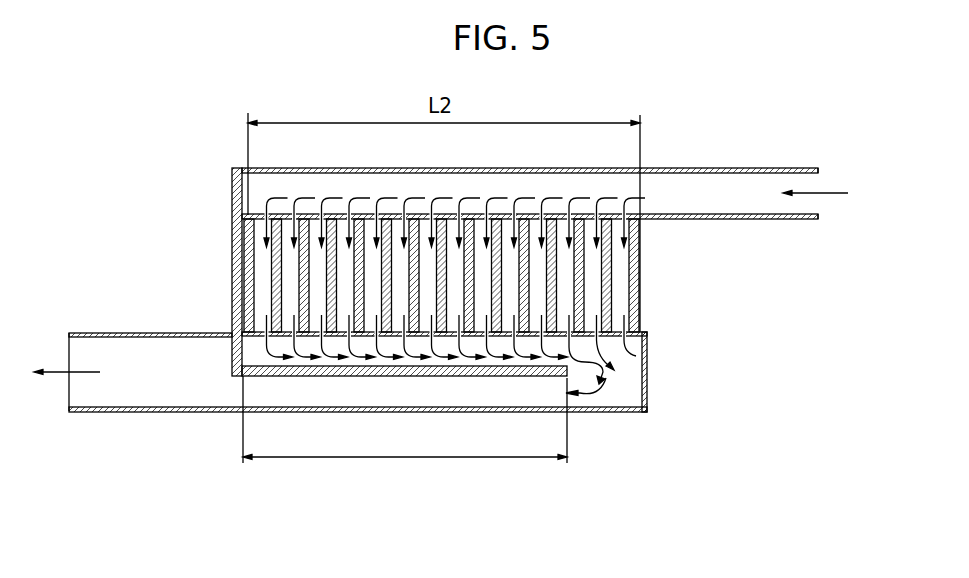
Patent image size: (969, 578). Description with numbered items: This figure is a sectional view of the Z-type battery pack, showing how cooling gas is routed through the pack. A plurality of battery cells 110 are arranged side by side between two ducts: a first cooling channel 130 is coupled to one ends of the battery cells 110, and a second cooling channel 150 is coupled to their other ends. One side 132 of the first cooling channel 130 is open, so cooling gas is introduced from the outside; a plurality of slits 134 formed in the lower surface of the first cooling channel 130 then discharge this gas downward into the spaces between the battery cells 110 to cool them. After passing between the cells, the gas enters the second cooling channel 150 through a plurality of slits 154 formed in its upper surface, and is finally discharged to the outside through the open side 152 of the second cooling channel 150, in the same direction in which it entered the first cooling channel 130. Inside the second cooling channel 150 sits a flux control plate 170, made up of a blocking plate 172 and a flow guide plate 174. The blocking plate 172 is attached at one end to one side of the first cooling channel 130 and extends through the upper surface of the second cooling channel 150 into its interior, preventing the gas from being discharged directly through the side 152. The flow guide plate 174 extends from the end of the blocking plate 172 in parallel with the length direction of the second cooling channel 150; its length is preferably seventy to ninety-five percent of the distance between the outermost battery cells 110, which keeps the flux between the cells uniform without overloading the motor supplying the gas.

The battery cells 110 is at (583, 302).
The first cooling channel 130 is at (697, 168).
The side of the first cooling channel 132 is at (822, 180).
The slits 134 is at (293, 214).
The second cooling channel 150 is at (107, 412).
The side of the second cooling channel 152 is at (68, 398).
The slits 154 is at (600, 338).
The flux control plate 170 is at (358, 359).
The blocking plate 172 is at (233, 345).
The flow guide plate 174 is at (260, 412).